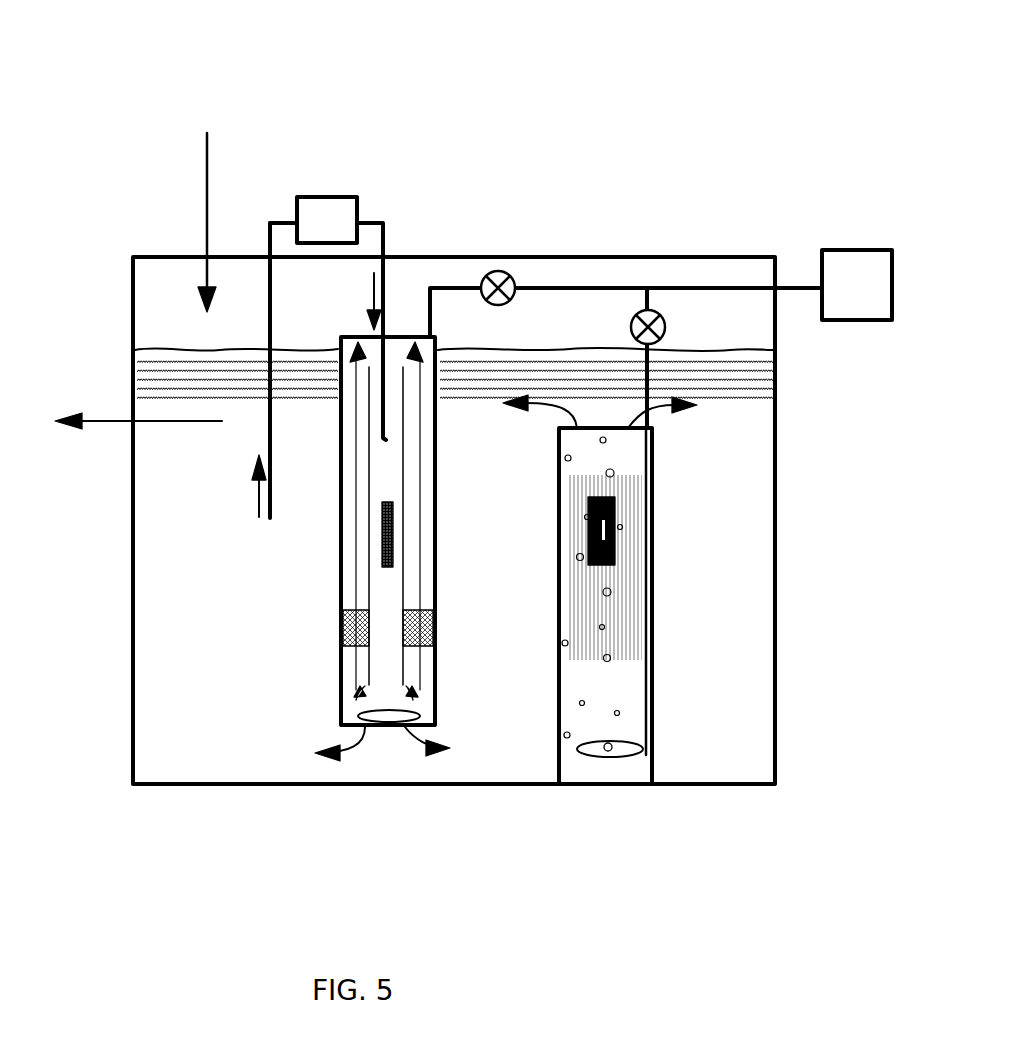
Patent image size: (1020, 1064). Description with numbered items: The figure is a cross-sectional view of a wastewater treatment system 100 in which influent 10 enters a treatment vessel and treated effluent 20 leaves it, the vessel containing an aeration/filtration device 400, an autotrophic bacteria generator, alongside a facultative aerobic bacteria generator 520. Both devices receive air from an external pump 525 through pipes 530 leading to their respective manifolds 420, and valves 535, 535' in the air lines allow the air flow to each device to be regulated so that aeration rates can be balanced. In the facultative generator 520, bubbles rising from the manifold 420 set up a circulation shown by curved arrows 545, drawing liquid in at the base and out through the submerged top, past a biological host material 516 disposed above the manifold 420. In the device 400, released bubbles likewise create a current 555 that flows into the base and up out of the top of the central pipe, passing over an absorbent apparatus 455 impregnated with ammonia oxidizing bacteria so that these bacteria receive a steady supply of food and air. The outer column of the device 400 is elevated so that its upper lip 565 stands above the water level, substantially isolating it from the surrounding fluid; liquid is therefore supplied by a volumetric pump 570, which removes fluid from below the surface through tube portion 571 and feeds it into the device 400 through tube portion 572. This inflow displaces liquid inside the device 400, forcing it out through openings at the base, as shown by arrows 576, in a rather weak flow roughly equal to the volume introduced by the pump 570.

The water treatment system 100 is at (452, 157).
The influent water 10 is at (206, 202).
The treated effluent 20 is at (137, 455).
The aeration/filtration device 400 is at (318, 623).
The air manifold 420 is at (392, 728).
The absorbent bacteria apparatus 455 is at (387, 574).
The biological host material 516 is at (630, 628).
The facultative aerobic bacteria generator 520 is at (675, 445).
The external pump 525 is at (855, 250).
The air pipes 530 is at (590, 288).
The valve 535 is at (682, 268).
The valve 535' is at (527, 234).
The circulation arrows 545 is at (673, 413).
The current 555 is at (357, 337).
The upper lip 565 is at (400, 327).
The volumetric pump 570 is at (327, 195).
The tube portion 571 is at (260, 418).
The tube portion 572 is at (373, 440).
The outflow arrows 576 is at (351, 752).